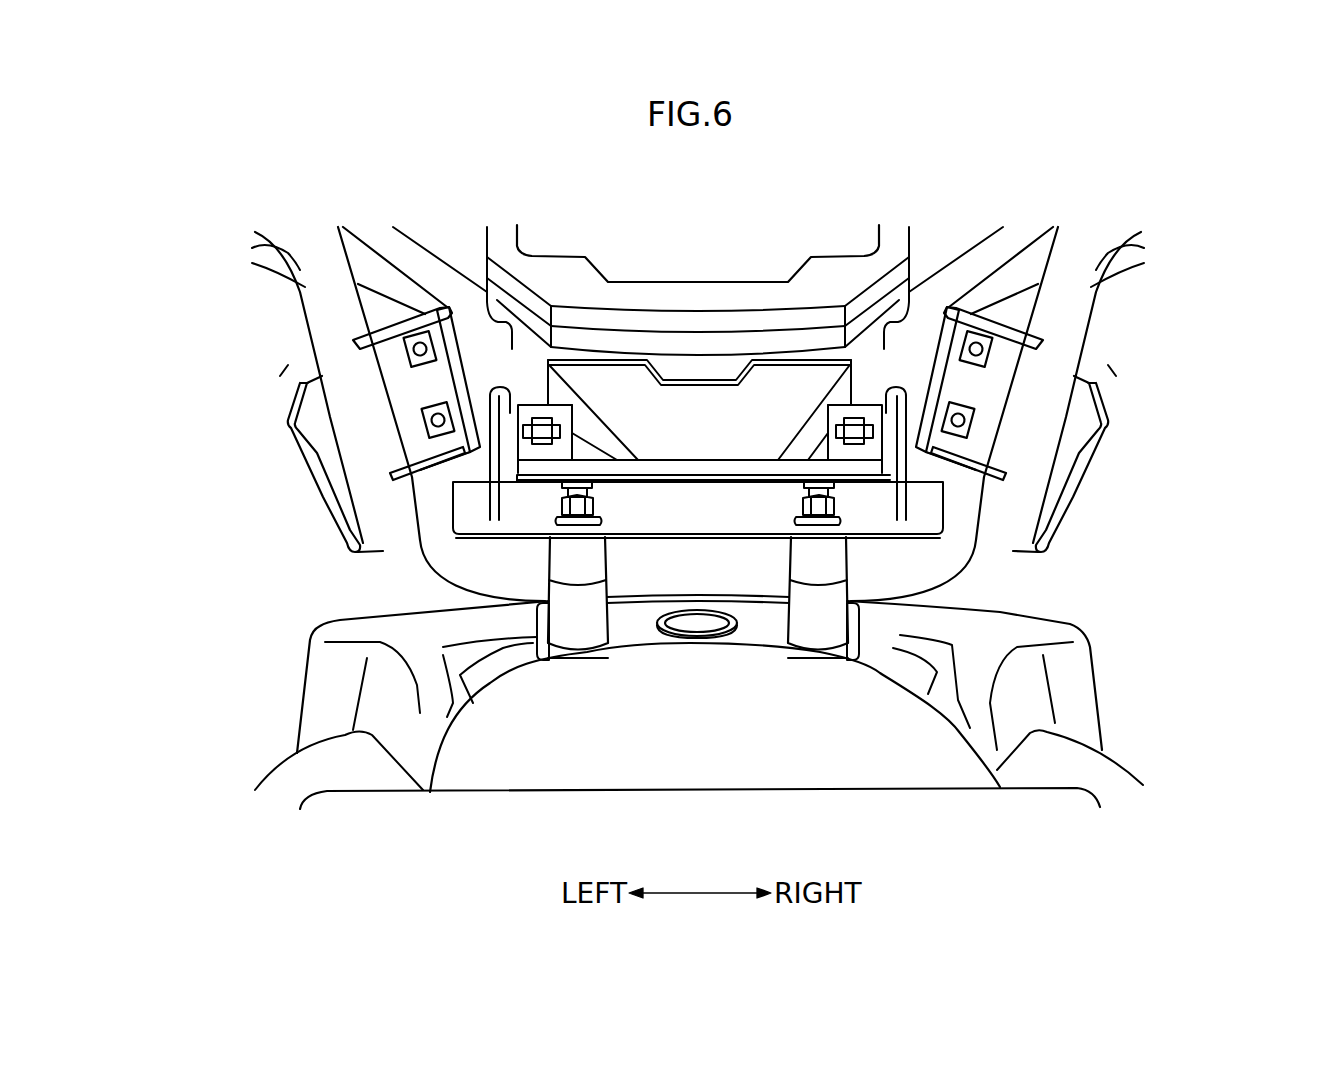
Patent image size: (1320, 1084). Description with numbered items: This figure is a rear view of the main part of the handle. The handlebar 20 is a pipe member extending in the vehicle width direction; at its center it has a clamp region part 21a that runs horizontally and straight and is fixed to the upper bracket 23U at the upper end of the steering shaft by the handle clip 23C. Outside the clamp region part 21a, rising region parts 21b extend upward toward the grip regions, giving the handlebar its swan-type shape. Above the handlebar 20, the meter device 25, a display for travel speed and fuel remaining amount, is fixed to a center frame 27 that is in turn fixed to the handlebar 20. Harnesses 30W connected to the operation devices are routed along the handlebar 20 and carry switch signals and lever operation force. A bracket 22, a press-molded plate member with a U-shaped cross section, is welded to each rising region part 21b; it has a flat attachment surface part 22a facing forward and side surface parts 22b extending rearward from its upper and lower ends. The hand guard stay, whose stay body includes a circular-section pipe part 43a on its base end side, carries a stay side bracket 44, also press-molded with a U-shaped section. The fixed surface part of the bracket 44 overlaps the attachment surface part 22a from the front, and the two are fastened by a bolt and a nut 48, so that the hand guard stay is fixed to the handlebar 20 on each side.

The handlebar 20 is at (1001, 513).
The clamp region part 21a is at (697, 567).
The rising region parts 21b is at (350, 438).
The bracket 22 is at (411, 390).
The attachment surface part 22a is at (407, 437).
The side surface parts 22b is at (372, 322).
The handle clip 23C is at (575, 568).
The upper bracket 23U is at (633, 640).
The meter device 25 is at (690, 262).
The center frame 27 is at (543, 462).
The harnesses 30W is at (378, 242).
The pipe part 43a is at (280, 376).
The bracket 44 is at (453, 329).
The nut 48 is at (410, 345).